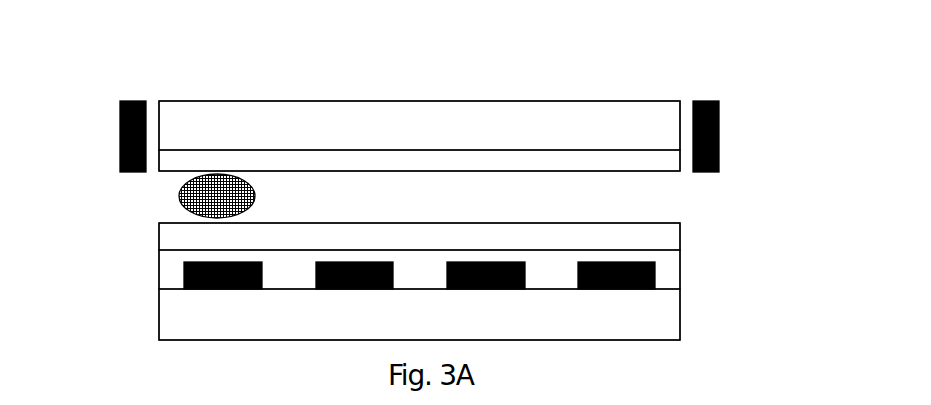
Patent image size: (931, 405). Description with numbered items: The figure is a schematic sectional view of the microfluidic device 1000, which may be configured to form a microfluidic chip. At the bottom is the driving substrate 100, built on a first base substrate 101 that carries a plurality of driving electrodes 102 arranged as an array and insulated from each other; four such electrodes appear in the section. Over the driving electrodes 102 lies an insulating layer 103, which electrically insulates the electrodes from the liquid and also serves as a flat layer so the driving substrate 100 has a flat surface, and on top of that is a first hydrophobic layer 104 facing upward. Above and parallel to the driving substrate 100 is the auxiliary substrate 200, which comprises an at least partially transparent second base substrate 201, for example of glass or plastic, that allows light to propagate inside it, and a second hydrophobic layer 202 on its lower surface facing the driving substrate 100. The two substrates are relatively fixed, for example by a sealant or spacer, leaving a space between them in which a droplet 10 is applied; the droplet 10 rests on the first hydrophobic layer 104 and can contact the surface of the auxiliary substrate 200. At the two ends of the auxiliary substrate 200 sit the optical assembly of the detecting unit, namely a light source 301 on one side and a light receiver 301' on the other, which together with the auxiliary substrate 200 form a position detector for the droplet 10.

The microfluidic device 1000 is at (681, 78).
The auxiliary substrate 200 is at (683, 92).
The second base substrate 201 is at (653, 125).
The second hydrophobic layer 202 is at (560, 164).
The light source 301 is at (81, 136).
The light receiver 301' is at (768, 136).
The droplet 10 is at (178, 198).
The driving substrate 100 is at (717, 232).
The first hydrophobic layer 104 is at (172, 237).
The insulating layer 103 is at (172, 270).
The driving electrodes 102 is at (655, 275).
The first base substrate 101 is at (677, 320).